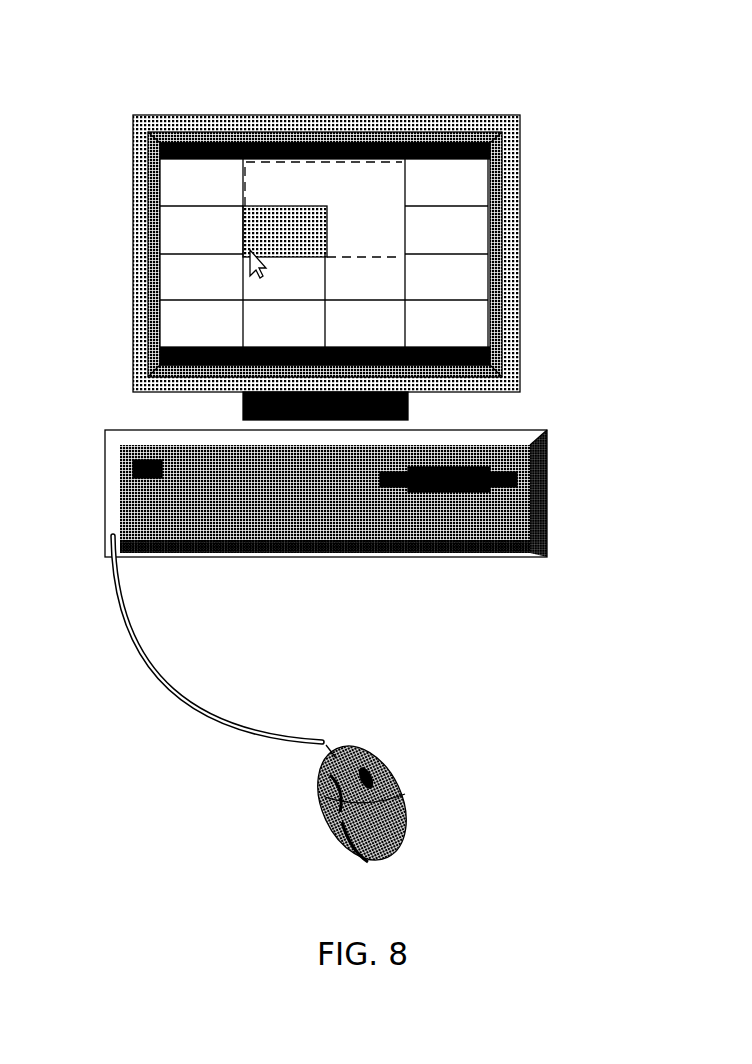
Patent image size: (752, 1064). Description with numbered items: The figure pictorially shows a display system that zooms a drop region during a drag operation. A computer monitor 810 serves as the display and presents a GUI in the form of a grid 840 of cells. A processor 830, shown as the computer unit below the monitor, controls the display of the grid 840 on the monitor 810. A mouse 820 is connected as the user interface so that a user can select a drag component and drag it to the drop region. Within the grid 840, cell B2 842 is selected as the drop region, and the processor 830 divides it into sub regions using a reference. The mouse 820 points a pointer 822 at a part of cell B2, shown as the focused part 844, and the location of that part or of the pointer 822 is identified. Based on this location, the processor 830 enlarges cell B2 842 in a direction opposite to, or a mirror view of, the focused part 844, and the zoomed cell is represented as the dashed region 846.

The computer monitor 810 is at (420, 108).
The mouse 820 is at (416, 781).
The pointer 822 is at (234, 277).
The processor 830 is at (510, 570).
The grid 840 is at (476, 221).
The cell B2 842 is at (274, 206).
The part of the drop region 844 is at (230, 243).
The zoomed cell B2 846 is at (330, 146).